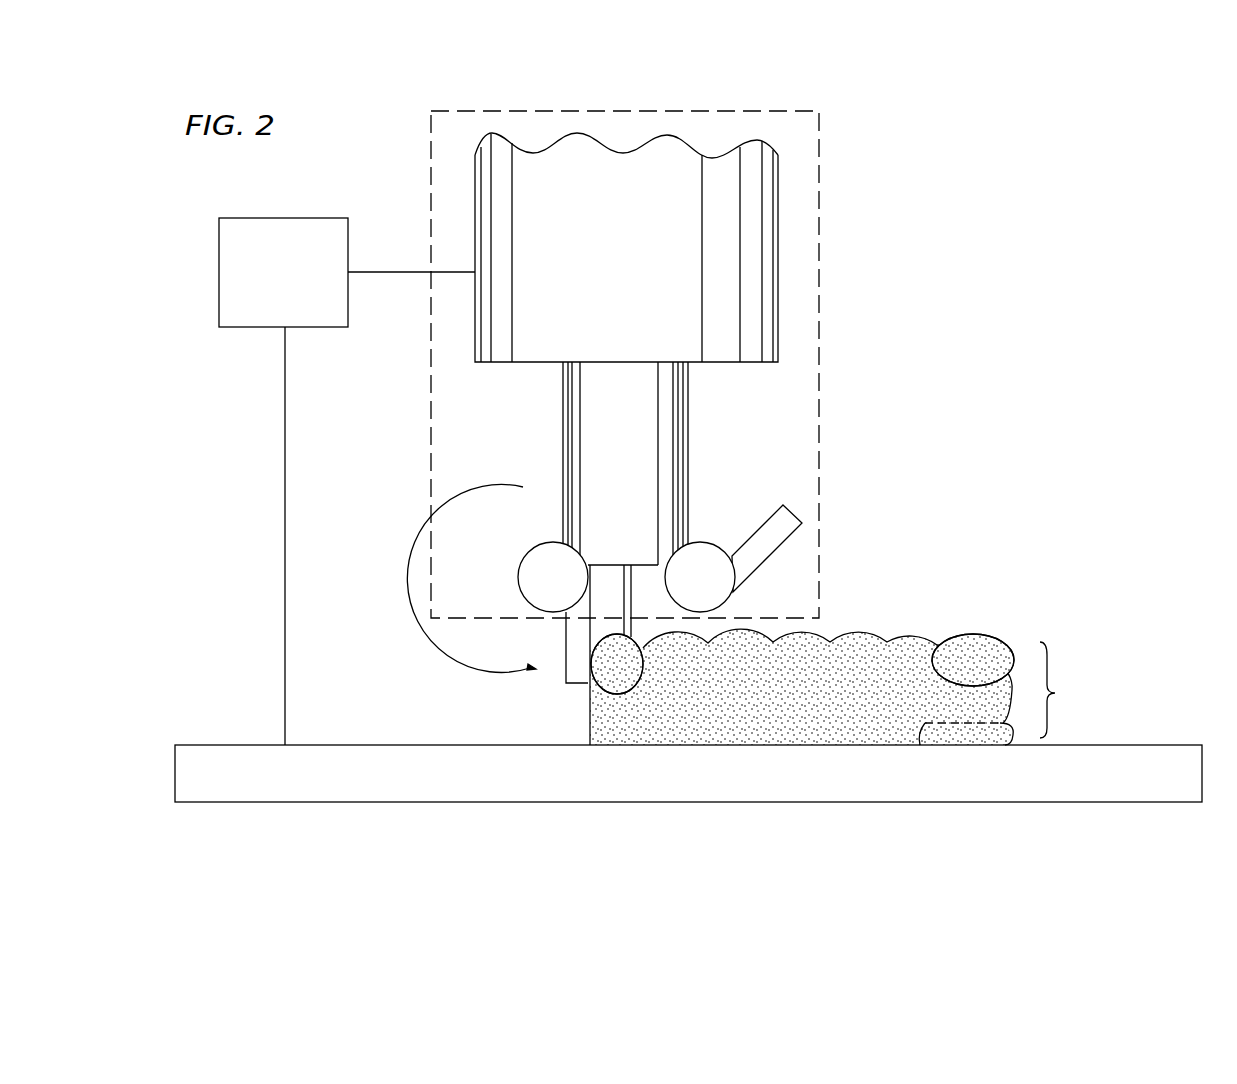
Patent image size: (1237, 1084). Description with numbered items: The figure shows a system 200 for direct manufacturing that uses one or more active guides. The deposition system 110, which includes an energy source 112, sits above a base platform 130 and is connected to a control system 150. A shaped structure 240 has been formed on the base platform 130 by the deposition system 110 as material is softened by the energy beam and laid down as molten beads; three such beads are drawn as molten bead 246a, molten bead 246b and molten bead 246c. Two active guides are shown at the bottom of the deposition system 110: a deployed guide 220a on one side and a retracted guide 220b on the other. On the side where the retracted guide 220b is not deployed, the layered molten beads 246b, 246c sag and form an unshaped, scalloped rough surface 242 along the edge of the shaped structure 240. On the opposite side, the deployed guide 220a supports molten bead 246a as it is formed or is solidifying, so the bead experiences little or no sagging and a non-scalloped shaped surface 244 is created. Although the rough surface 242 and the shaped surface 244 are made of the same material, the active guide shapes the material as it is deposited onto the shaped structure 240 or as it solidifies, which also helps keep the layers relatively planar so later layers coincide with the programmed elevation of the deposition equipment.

The deposition system 110 is at (819, 294).
The energy source 112 is at (688, 447).
The base platform 130 is at (232, 745).
The control system 150 is at (268, 308).
The system for direct manufacturing 200 is at (1140, 177).
The deployed guide 220a is at (566, 670).
The retracted guide 220b is at (781, 547).
The shaped structure 240 is at (863, 723).
The rough surface 242 is at (1047, 693).
The shaped surface 244 is at (590, 718).
The molten bead 246a is at (630, 677).
The molten bead 246b is at (992, 658).
The molten bead 246c is at (1015, 733).